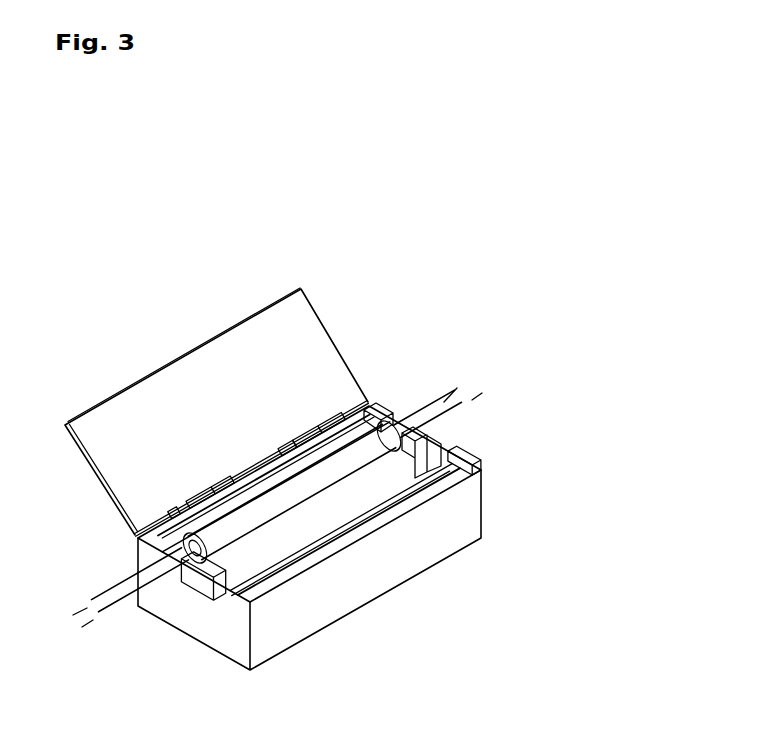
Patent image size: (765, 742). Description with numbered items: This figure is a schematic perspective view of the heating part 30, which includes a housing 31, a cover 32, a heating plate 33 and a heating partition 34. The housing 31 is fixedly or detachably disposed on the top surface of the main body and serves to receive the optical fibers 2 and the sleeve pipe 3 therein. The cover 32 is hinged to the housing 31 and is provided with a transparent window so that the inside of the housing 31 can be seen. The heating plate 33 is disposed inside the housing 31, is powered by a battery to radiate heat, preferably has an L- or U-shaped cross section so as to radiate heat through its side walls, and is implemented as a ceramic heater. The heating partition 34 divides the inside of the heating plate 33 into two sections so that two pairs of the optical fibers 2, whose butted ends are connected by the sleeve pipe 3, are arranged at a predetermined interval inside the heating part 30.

The heating part 30 is at (425, 300).
The housing 31 is at (440, 548).
The cover 32 is at (280, 345).
The heating plate 33 is at (478, 470).
The heating partition 34 is at (433, 440).
The sleeve pipe 3 is at (359, 441).
The optical fibers 2 is at (455, 400).